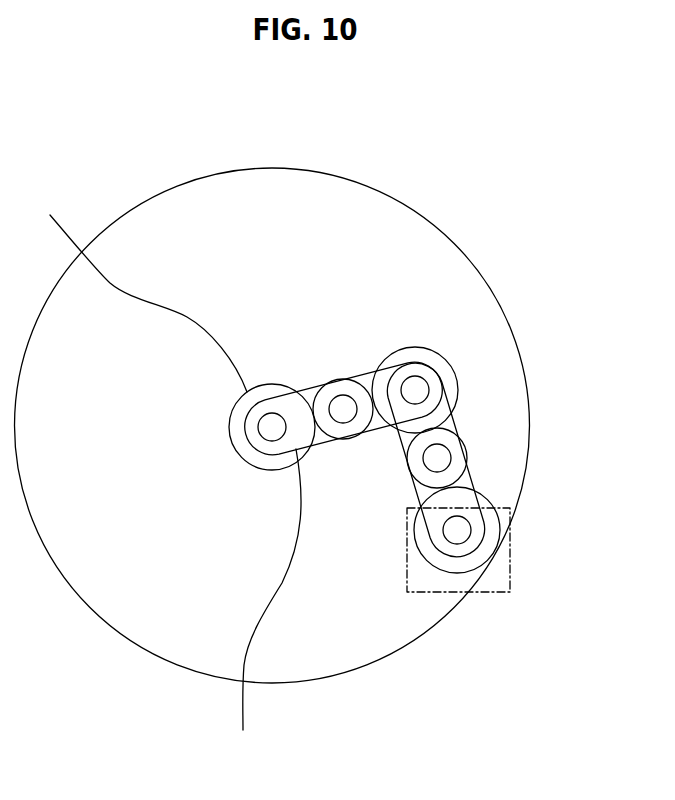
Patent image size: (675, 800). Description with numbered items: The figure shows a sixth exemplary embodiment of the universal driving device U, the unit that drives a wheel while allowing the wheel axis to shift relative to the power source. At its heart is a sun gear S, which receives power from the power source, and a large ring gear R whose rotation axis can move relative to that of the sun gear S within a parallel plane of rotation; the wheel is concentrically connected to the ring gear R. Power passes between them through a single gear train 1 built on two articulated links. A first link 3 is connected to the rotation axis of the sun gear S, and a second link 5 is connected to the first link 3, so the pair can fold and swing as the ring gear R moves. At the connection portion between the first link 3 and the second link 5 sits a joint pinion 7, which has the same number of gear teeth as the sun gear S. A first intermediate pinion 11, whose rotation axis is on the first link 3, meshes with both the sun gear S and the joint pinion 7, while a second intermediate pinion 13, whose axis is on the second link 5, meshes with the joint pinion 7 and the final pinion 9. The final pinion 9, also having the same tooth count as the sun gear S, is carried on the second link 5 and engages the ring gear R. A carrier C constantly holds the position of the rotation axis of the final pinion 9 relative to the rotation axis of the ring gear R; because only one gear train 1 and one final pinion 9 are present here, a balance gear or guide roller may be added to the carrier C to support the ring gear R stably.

The gear train 1 is at (488, 366).
The first link 3 is at (268, 606).
The second link 5 is at (470, 497).
The joint pinion 7 is at (431, 347).
The final pinion 9 is at (482, 562).
The first intermediate pinion 11 is at (338, 380).
The second intermediate pinion 13 is at (467, 453).
The universal driving device U is at (145, 192).
The sun gear S is at (139, 294).
The ring gear R is at (440, 222).
The carrier C is at (512, 565).